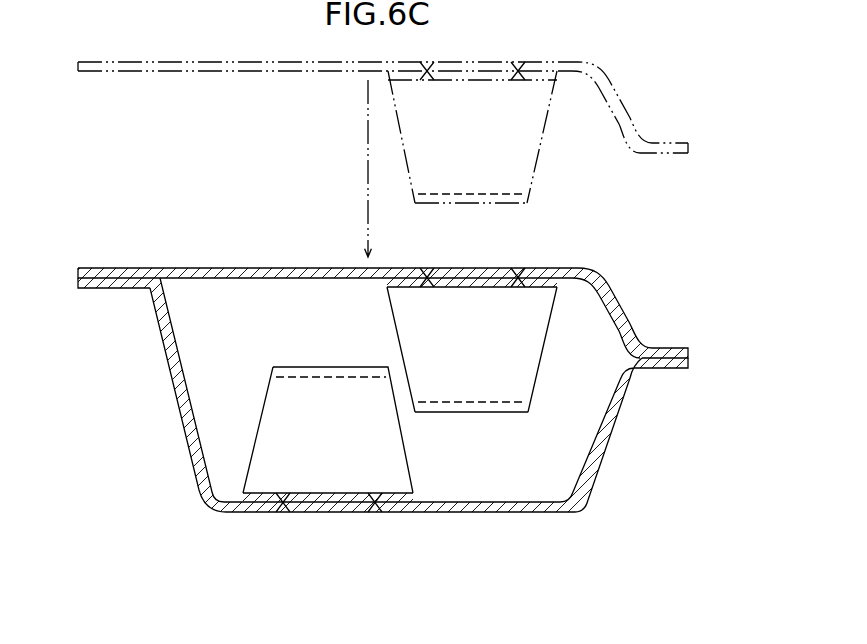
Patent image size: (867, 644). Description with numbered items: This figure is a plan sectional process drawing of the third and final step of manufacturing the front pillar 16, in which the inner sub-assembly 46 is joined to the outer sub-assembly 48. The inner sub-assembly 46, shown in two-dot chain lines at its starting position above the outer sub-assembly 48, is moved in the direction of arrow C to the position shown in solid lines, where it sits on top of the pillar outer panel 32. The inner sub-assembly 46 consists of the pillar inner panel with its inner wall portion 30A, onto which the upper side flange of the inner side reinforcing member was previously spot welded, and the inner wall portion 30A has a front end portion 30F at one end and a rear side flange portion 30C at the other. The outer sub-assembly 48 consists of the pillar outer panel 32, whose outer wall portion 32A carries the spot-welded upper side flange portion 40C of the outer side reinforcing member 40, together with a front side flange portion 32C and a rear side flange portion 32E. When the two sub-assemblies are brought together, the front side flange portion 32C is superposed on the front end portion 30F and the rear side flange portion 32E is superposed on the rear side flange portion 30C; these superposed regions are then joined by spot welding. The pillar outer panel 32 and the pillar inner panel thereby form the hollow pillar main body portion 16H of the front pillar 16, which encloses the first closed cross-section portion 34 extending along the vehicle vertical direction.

The front pillar 16 is at (401, 399).
The pillar main body portion 16H is at (158, 378).
The inner wall portion 30A is at (260, 268).
The front end portion 30F is at (95, 268).
The rear side flange portion 30C is at (672, 348).
The pillar outer panel 32 is at (403, 399).
The outer wall portion 32A is at (465, 500).
The front side flange portion 32C is at (97, 287).
The rear side flange portion 32E is at (678, 368).
The first closed cross-section portion 34 is at (262, 334).
The outer side reinforcing member 40 is at (306, 420).
The upper side flange portion 40C is at (333, 493).
The inner sub-assembly 46 is at (603, 267).
The outer sub-assembly 48 is at (637, 493).
The arrow C is at (372, 208).